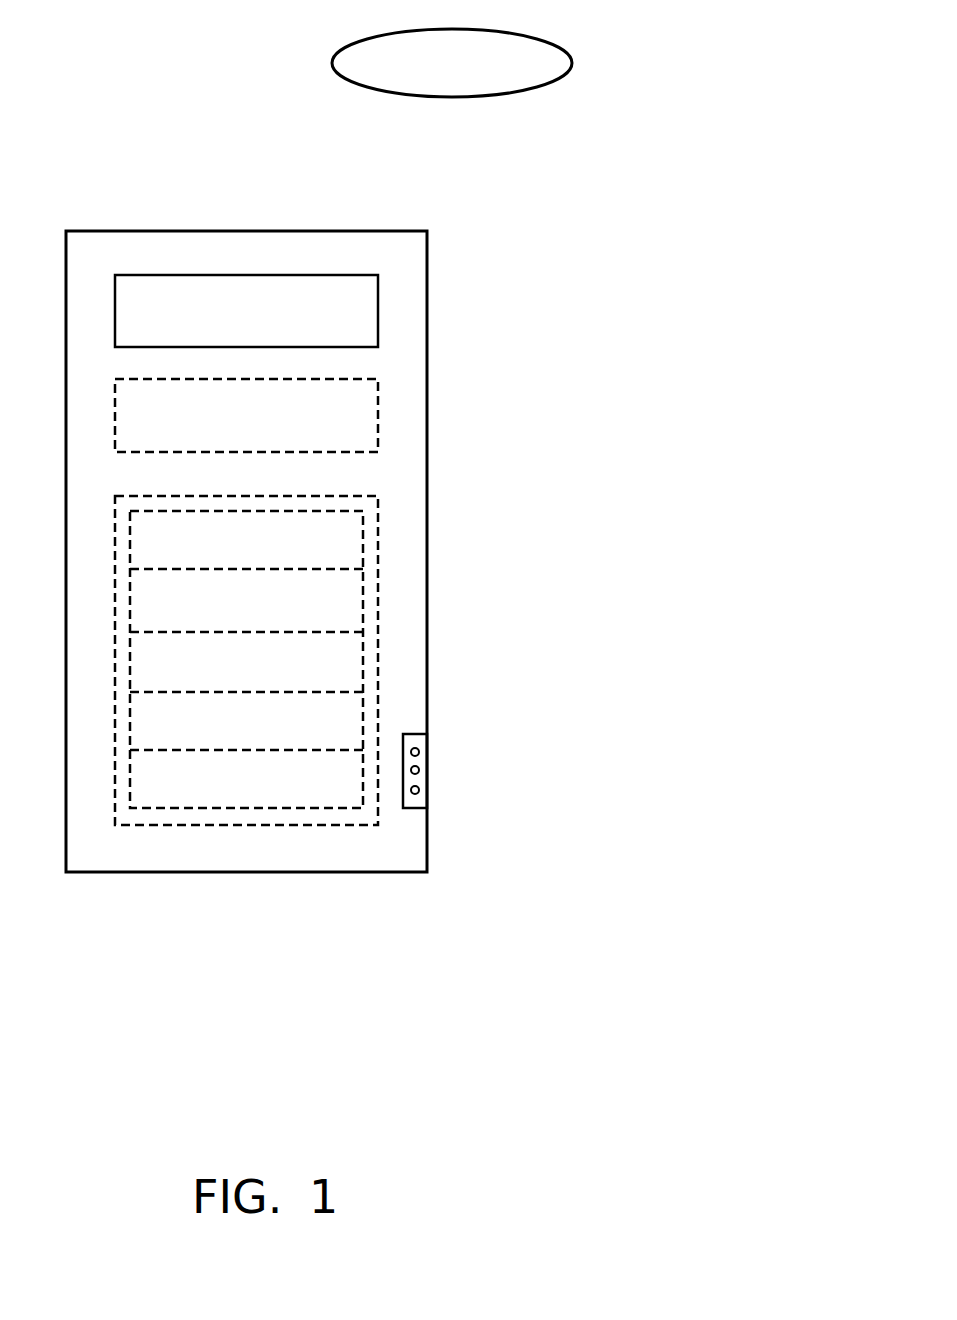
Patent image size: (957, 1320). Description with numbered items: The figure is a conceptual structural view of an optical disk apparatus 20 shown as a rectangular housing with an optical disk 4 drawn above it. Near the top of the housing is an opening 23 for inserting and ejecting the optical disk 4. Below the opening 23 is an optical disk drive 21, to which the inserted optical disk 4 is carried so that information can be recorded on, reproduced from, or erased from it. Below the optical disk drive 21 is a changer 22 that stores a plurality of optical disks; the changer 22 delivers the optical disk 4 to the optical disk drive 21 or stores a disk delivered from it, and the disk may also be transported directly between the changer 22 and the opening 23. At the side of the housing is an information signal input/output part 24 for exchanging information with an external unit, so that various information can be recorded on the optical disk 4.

The optical disk 4 is at (557, 47).
The optical disk apparatus 20 is at (255, 872).
The optical disk drive 21 is at (378, 417).
The changer 22 is at (378, 548).
The opening 23 is at (378, 316).
The information signal input/output part 24 is at (416, 770).